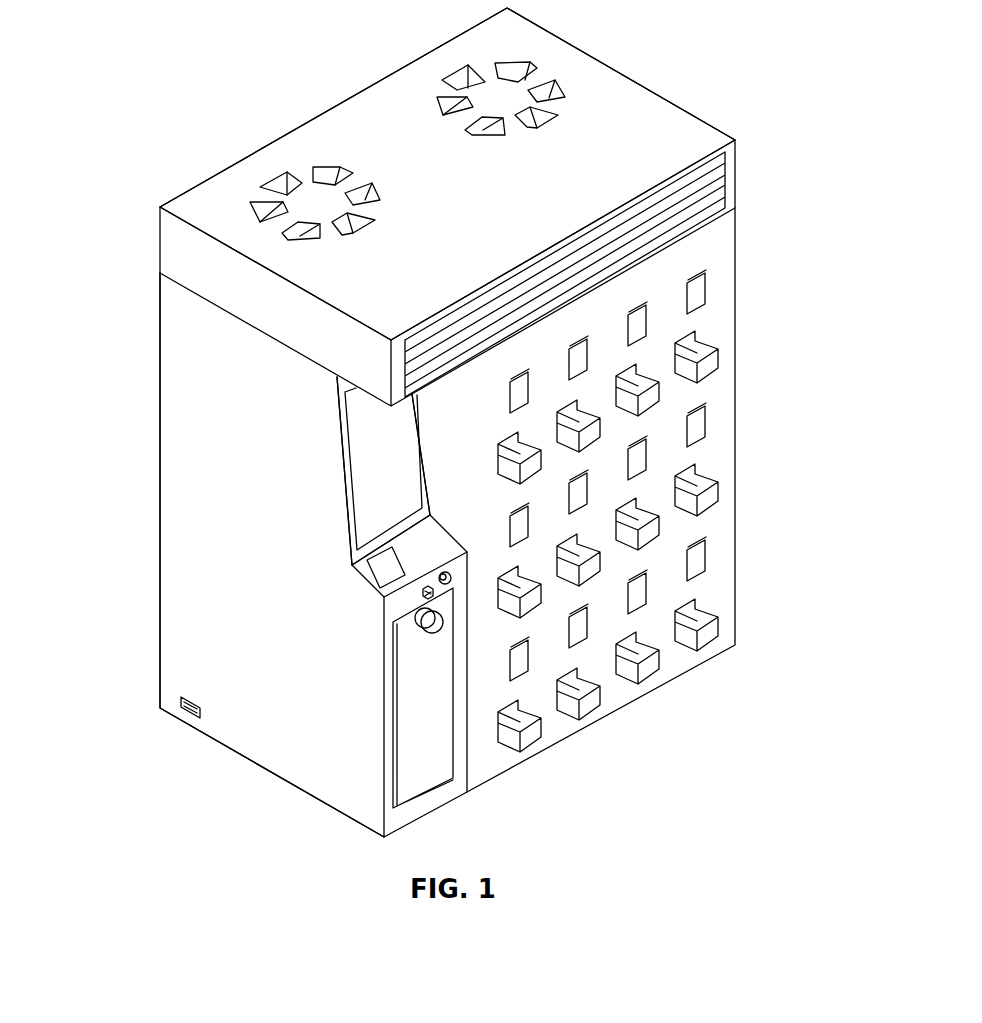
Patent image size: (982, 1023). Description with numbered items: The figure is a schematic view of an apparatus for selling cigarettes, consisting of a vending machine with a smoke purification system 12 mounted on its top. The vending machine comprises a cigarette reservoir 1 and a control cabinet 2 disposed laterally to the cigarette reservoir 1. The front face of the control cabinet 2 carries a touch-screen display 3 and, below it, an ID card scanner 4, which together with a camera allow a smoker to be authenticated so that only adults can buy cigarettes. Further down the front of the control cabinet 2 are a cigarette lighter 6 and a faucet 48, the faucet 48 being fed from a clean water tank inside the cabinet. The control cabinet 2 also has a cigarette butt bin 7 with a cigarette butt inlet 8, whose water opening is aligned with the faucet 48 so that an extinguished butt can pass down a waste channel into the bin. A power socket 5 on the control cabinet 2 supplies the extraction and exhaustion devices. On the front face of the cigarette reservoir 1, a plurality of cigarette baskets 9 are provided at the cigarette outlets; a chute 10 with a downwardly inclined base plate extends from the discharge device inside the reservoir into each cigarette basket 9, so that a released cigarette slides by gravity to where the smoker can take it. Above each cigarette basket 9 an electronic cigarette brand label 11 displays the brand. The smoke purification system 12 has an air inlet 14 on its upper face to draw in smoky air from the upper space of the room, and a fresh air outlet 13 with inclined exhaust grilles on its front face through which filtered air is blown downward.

The cigarette reservoir 1 is at (718, 422).
The control cabinet 2 is at (208, 560).
The touch-screen display 3 is at (363, 467).
The ID card scanner 4 is at (380, 573).
The power socket 5 is at (185, 705).
The cigarette lighter 6 is at (445, 578).
The cigarette butt bin 7 is at (420, 733).
The cigarette butt inlet 8 is at (433, 623).
The cigarette basket 9 is at (593, 702).
The chute 10 is at (633, 642).
The cigarette brand label 11 is at (692, 558).
The smoke purification system 12 is at (642, 118).
The fresh air outlet 13 is at (703, 192).
The air inlet 14 is at (287, 188).
The faucet 48 is at (427, 593).